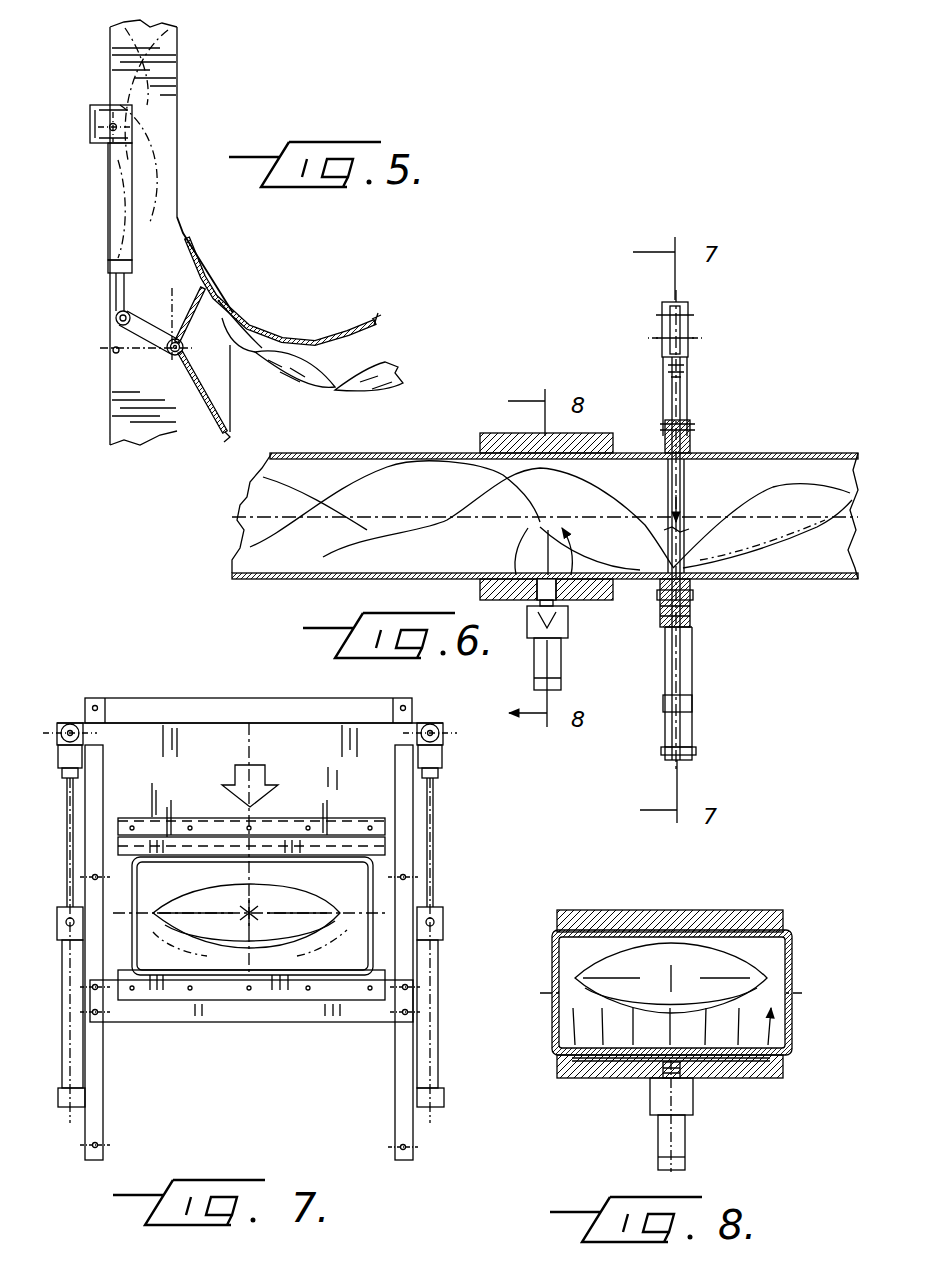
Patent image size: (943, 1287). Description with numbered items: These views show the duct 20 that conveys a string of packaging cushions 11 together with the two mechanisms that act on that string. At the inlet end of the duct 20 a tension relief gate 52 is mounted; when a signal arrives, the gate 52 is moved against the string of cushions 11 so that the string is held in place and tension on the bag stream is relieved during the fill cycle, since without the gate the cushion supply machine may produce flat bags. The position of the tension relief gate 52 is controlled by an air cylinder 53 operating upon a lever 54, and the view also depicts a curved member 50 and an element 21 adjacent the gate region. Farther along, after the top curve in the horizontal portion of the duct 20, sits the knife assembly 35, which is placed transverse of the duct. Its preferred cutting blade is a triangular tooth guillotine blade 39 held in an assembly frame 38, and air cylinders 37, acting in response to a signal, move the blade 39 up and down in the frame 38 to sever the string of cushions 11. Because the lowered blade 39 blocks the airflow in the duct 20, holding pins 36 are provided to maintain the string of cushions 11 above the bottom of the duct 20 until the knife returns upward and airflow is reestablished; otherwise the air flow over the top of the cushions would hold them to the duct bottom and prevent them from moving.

In FIG. 5, the string of packaging cushions 11 is at (383, 358).
In FIG. 6, the string of packaging cushions 11 is at (364, 529).
In FIG. 7, the string of packaging cushions 11 is at (203, 900).
In FIG. 8, the string of packaging cushions 11 is at (650, 950).
In FIG. 5, the duct 20 is at (182, 73).
In FIG. 6, the duct 20 is at (777, 454).
In FIG. 7, the duct 20 is at (373, 888).
In FIG. 8, the duct 20 is at (798, 941).
In FIG. 5, the duct outlet 21 is at (231, 397).
In FIG. 6, the knife assembly 35 is at (703, 375).
In FIG. 7, the knife assembly 35 is at (205, 702).
In FIG. 6, the holding pins 36 is at (568, 623).
In FIG. 8, the holding pins 36 is at (694, 1093).
In FIG. 6, the air cylinders 37 is at (690, 670).
In FIG. 7, the air cylinders 37 is at (78, 1066).
In FIG. 6, the assembly frame 38 is at (693, 587).
In FIG. 7, the assembly frame 38 is at (232, 991).
In FIG. 6, the triangular tooth guillotine blade 39 is at (670, 428).
In FIG. 7, the triangular tooth guillotine blade 39 is at (390, 806).
In FIG. 5, the deflector plate 50 is at (208, 272).
In FIG. 5, the tension relief gate 52 is at (196, 308).
In FIG. 5, the air cylinder 53 is at (108, 216).
In FIG. 5, the lever 54 is at (143, 323).